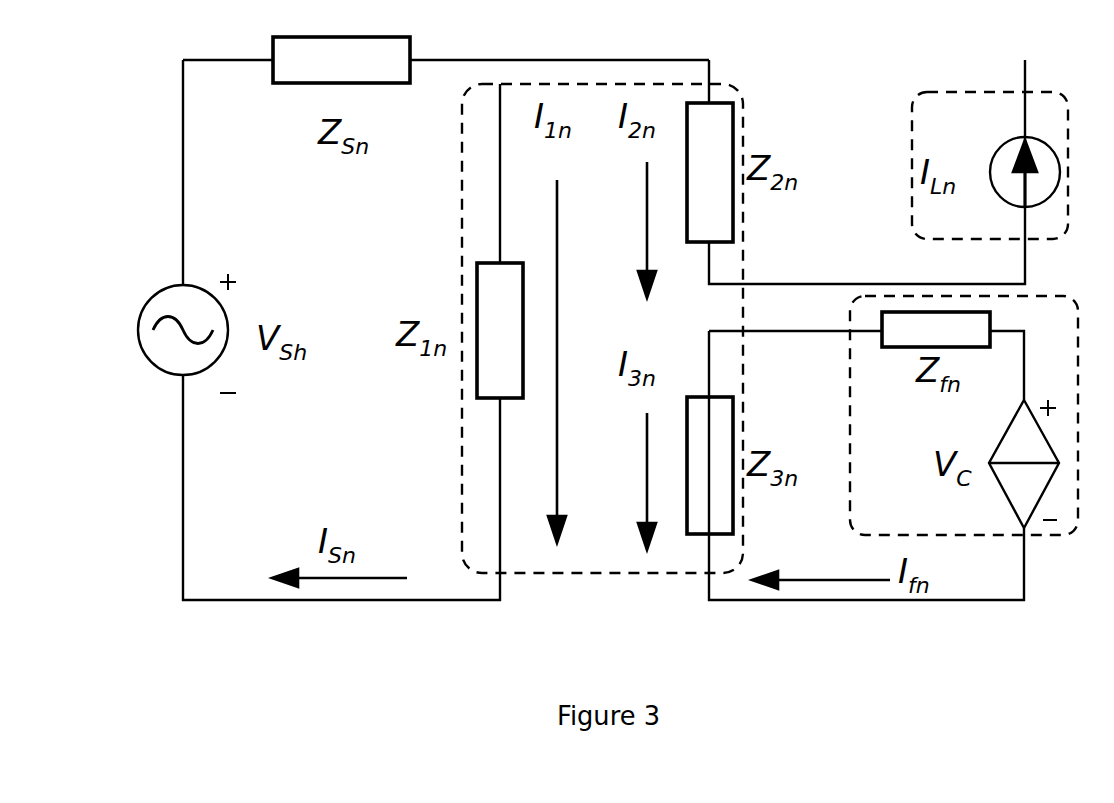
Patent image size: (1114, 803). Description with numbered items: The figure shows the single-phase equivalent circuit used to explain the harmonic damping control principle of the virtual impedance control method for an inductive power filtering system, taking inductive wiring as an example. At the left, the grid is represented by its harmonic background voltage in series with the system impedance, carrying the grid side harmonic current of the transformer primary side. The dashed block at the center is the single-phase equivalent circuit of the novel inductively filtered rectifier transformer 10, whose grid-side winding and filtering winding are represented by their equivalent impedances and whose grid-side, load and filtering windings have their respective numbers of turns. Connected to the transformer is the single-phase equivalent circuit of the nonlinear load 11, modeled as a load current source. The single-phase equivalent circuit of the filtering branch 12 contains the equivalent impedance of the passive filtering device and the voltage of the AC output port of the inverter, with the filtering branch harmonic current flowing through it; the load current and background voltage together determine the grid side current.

The single-phase equivalent circuit of novel inductively filtered rectifier transfor 10 is at (602, 331).
The single-phase equivalent circuit of nonlinear load 11 is at (990, 165).
The single-phase equivalent circuit of filtering branch 12 is at (964, 415).